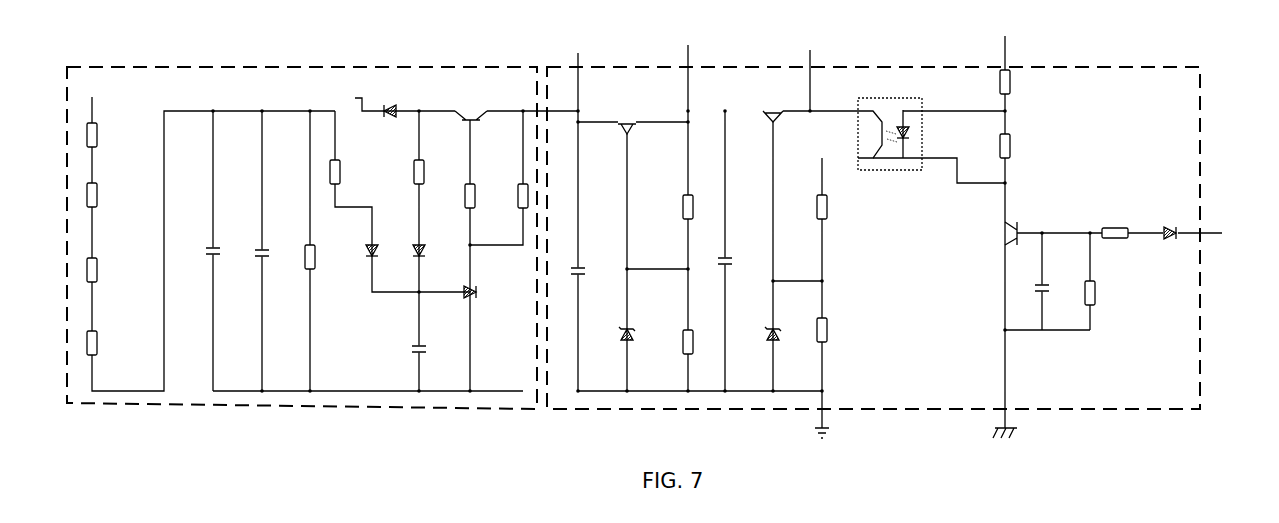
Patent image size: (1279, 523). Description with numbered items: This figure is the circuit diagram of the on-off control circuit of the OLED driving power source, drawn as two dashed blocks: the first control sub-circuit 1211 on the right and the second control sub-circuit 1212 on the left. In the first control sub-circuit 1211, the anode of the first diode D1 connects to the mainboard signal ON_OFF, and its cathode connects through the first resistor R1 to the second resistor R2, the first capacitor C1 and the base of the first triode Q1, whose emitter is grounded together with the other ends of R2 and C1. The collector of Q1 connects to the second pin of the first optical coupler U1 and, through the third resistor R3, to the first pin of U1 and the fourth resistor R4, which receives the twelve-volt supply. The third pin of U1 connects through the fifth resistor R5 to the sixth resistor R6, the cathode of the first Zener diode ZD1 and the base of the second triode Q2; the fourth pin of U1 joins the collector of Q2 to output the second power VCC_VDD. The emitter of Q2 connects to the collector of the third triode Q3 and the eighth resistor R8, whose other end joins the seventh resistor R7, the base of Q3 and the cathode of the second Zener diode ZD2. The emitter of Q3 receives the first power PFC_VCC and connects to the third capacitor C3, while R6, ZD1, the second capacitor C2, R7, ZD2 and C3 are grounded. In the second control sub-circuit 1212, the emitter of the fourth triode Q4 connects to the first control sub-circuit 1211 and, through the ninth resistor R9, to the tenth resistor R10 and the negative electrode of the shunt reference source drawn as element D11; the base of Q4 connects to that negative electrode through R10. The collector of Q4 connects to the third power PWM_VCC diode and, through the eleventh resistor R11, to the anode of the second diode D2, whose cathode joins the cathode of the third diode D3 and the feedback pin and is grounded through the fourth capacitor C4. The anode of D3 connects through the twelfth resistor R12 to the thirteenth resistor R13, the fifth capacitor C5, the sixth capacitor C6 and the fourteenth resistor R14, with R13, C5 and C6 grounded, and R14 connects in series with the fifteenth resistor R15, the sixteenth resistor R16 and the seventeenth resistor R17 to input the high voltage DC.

The second control sub-circuit 1212 is at (282, 406).
The first control sub-circuit 1211 is at (643, 409).
The seventeenth resistor R17 is at (102, 141).
The sixteenth resistor R16 is at (102, 201).
The fifteenth resistor R15 is at (102, 276).
The fourteenth resistor R14 is at (102, 349).
The thirteenth resistor R13 is at (320, 257).
The twelfth resistor R12 is at (346, 172).
The eleventh resistor R11 is at (406, 172).
The tenth resistor R10 is at (454, 196).
The ninth resistor R9 is at (513, 196).
The sixth capacitor C6 is at (204, 244).
The fifth capacitor C5 is at (268, 260).
The fourth capacitor C4 is at (410, 342).
The third diode D3 is at (363, 242).
The second diode D2 is at (426, 242).
The diode D11 is at (485, 292).
The fourth triode Q4 is at (471, 105).
The first optical coupler U1 is at (890, 127).
The third triode Q3 is at (627, 118).
The second triode Q2 is at (773, 107).
The first triode Q1 is at (1001, 233).
The sixth resistor R6 is at (678, 207).
The seventh resistor R7 is at (678, 342).
The fifth resistor R5 is at (833, 207).
The eighth resistor R8 is at (833, 330).
The fourth resistor R4 is at (1013, 82).
The third resistor R3 is at (1019, 146).
The second resistor R2 is at (1100, 293).
The first resistor R1 is at (1115, 226).
The third capacitor C3 is at (586, 262).
The second capacitor C2 is at (731, 252).
The first capacitor C1 is at (1035, 289).
The second Zener diode ZD2 is at (612, 334).
The first Zener diode ZD1 is at (759, 334).
The first diode D1 is at (1169, 243).